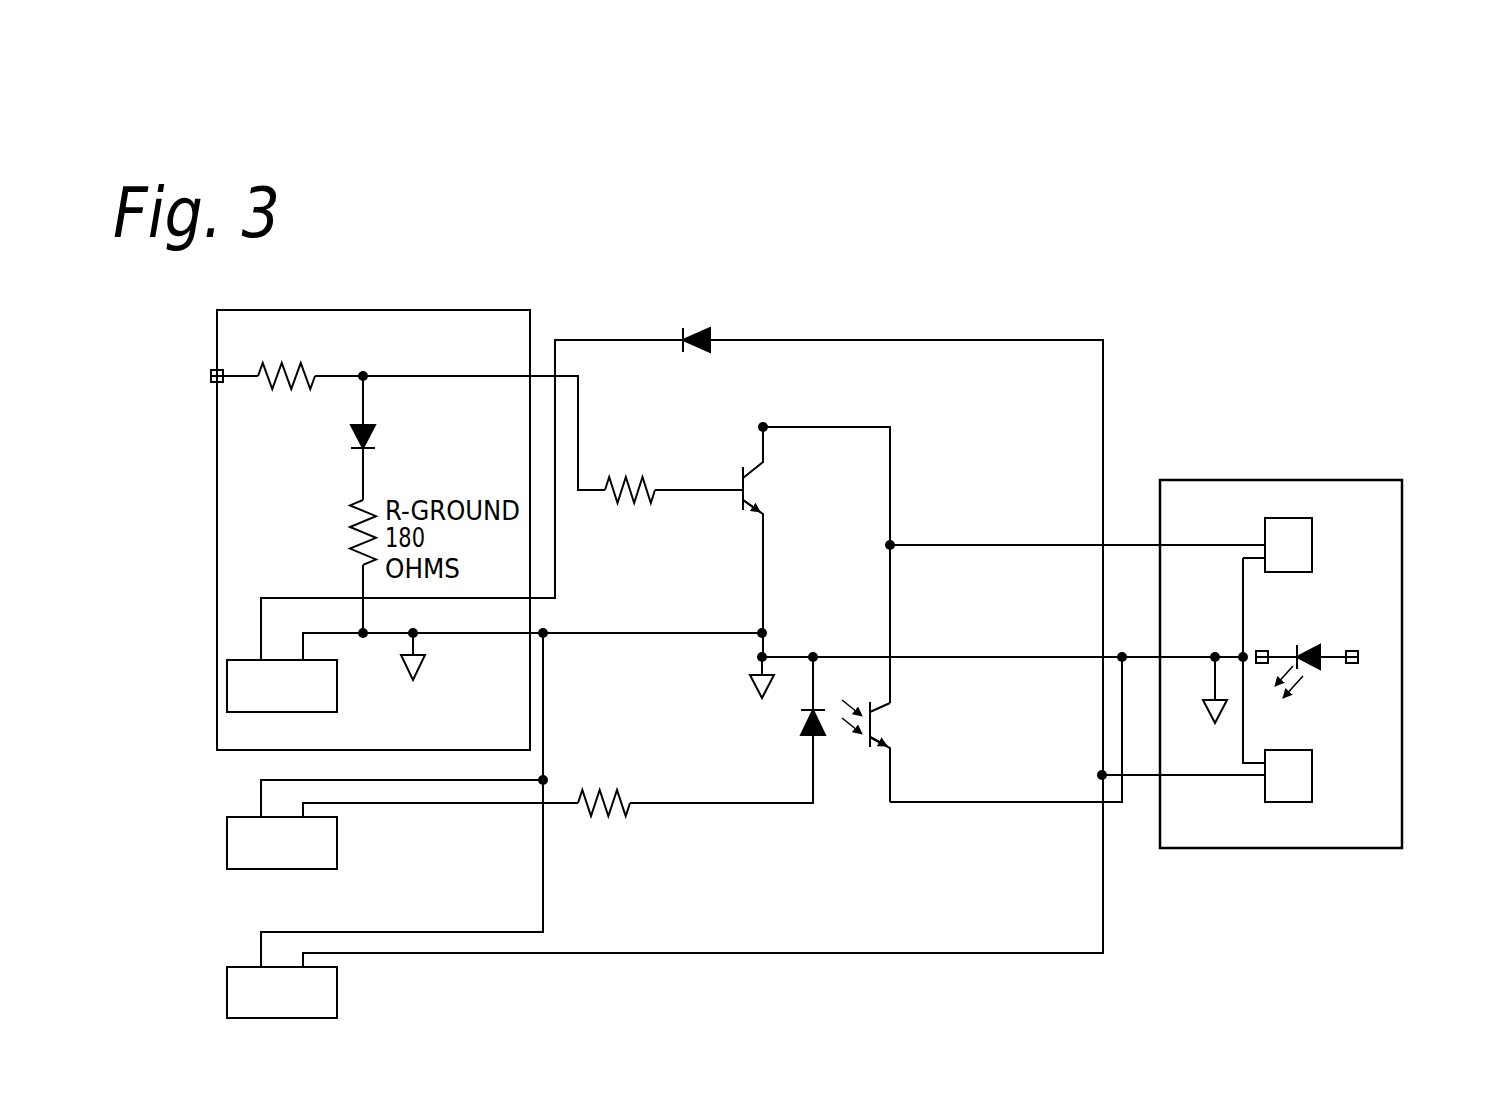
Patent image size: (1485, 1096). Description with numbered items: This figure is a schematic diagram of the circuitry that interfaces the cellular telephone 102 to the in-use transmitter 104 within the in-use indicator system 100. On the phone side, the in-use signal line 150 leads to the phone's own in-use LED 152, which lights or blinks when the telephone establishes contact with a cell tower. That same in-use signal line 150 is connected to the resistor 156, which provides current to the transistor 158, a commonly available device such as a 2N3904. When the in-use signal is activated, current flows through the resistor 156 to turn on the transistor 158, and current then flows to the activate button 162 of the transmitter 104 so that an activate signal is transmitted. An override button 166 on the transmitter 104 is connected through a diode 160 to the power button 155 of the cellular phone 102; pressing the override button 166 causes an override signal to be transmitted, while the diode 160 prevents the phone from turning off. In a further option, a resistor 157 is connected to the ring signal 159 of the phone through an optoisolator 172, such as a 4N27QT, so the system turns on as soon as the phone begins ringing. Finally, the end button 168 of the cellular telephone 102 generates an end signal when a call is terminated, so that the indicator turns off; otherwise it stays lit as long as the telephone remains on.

The in-use indicator system 100 is at (1222, 375).
The cellular telephone 102 is at (513, 315).
The in-use transmitter 104 is at (1402, 686).
The in-use signal line 150 is at (367, 372).
The in-use LED 152 is at (350, 437).
The power button 155 is at (337, 697).
The resistor 156 is at (650, 482).
The resistor 157 is at (622, 795).
The transistor 158 is at (745, 505).
The ring signal 159 is at (337, 855).
The diode 160 is at (705, 335).
The activate button 162 is at (1312, 527).
The override button 166 is at (1312, 780).
The end button 168 is at (337, 1000).
The optoisolator 172 is at (867, 748).